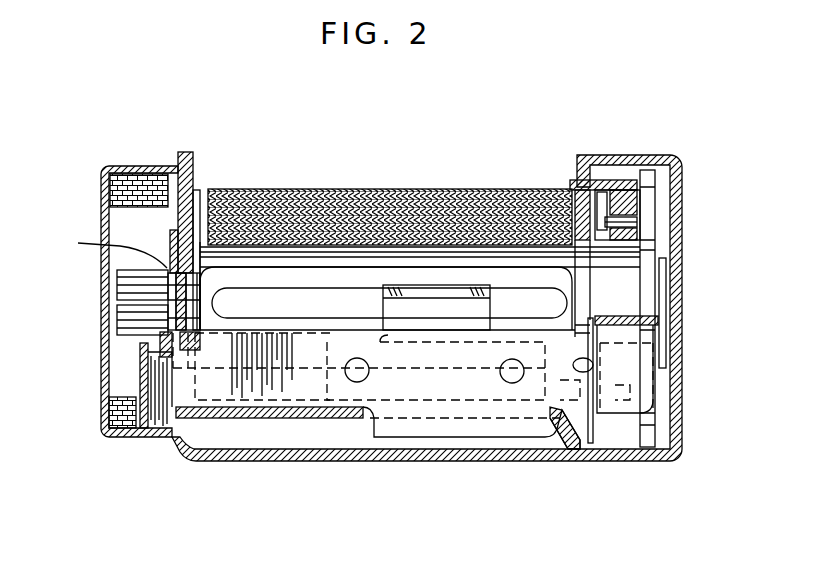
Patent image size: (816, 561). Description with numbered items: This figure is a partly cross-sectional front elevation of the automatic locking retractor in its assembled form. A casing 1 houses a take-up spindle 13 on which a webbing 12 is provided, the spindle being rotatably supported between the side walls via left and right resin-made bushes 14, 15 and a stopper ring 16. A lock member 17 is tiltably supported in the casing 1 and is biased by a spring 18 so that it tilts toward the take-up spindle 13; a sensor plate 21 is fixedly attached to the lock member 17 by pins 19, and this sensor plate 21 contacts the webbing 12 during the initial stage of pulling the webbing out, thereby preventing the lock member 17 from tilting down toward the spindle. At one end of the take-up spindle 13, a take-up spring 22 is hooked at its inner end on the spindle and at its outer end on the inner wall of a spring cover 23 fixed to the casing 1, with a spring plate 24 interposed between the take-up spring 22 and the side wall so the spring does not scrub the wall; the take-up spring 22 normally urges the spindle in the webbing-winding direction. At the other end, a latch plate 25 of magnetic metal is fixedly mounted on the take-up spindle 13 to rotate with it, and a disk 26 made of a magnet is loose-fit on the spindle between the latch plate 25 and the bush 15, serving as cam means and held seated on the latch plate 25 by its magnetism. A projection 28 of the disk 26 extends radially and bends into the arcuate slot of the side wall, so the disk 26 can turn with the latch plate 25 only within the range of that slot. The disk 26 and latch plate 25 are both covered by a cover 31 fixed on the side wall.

The casing 1 is at (499, 463).
The webbing 12 is at (390, 190).
The take-up spindle 13 is at (493, 262).
The resin-made bush 14 is at (197, 268).
The resin-made bush 15 is at (600, 178).
The stopper ring 16 is at (101, 282).
The lock member 17 is at (285, 388).
The spring 18 is at (599, 447).
The pin 19 is at (360, 380).
The sensor plate 21 is at (445, 312).
The take-up spring 22 is at (125, 438).
The spring cover 23 is at (100, 306).
The spring plate 24 is at (178, 165).
The latch plate 25 is at (643, 247).
The disk 26 is at (640, 222).
The projection 28 is at (622, 180).
The cover 31 is at (655, 335).